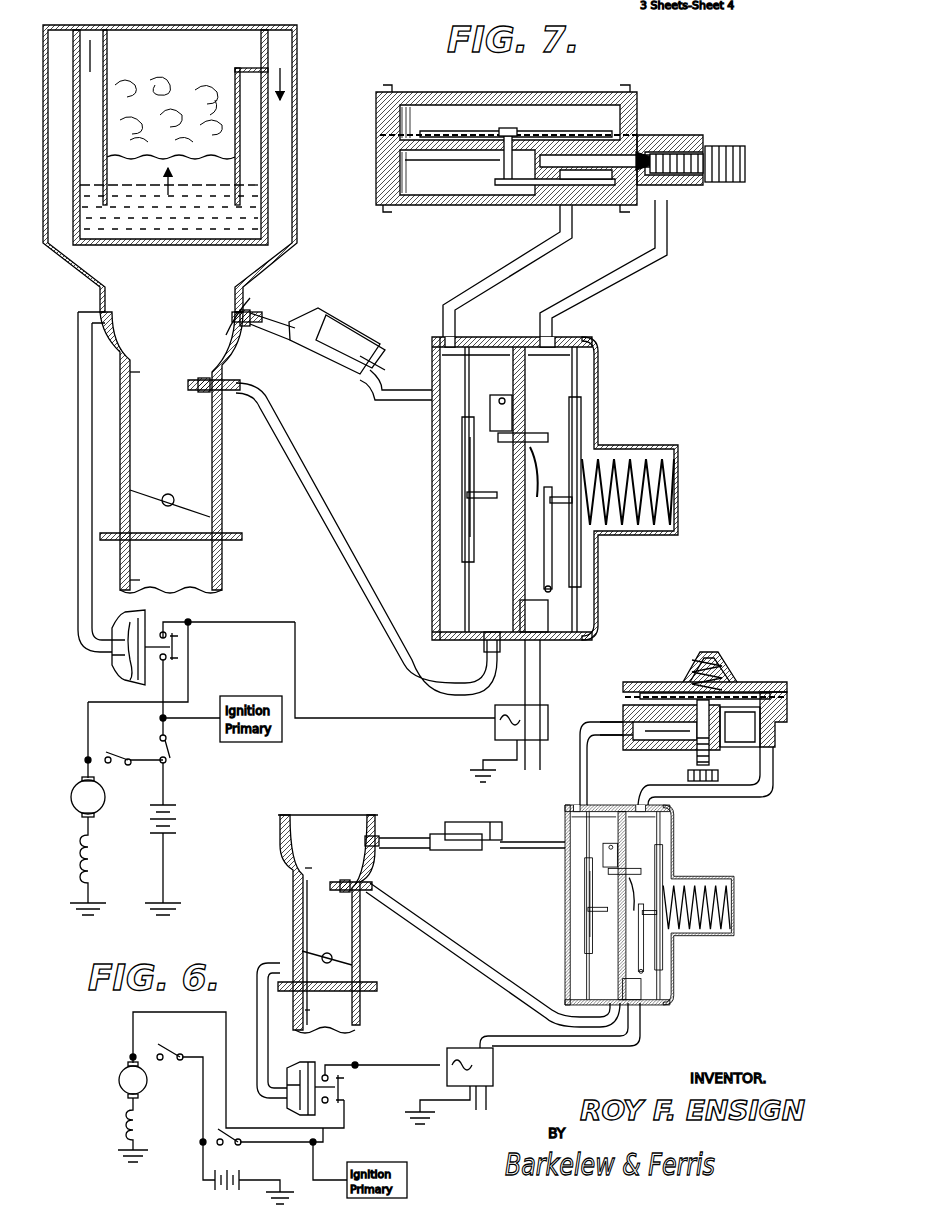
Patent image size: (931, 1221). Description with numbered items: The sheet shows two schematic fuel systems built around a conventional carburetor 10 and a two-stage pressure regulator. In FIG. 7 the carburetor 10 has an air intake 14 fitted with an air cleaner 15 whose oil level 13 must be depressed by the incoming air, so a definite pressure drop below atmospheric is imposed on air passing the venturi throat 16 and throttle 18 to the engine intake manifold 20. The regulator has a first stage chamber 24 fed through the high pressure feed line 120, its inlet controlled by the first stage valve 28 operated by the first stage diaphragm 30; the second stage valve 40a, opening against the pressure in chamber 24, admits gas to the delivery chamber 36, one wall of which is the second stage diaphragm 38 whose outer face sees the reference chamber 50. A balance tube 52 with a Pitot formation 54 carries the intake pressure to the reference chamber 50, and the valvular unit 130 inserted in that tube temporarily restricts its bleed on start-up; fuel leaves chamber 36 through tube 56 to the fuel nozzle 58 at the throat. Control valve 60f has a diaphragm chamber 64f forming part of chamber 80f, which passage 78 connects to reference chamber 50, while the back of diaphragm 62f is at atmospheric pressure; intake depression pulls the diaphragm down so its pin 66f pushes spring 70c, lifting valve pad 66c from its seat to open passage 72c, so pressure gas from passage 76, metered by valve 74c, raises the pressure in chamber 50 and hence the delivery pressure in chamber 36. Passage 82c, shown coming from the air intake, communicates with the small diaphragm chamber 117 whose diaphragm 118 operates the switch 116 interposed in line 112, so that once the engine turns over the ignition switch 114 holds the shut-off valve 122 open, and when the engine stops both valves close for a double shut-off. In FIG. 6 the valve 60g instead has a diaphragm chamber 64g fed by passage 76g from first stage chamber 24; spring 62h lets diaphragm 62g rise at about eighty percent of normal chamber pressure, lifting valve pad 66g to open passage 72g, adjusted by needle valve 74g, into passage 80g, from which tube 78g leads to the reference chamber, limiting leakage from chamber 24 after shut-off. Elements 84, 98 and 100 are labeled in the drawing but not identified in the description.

In FIG. 7, the carburetor 10 is at (118, 442).
In FIG. 7, the oil level 13 is at (250, 185).
In FIG. 7, the air intake 14 is at (195, 317).
In FIG. 6, the air intake 14 is at (328, 924).
In FIG. 7, the air cleaner 15 is at (300, 90).
In FIG. 7, the venturi throat 16 is at (169, 366).
In FIG. 6, the venturi throat 16 is at (328, 864).
In FIG. 7, the throttle 18 is at (170, 497).
In FIG. 6, the throttle 18 is at (345, 960).
In FIG. 7, the engine intake manifold 20 is at (170, 564).
In FIG. 6, the engine intake manifold 20 is at (325, 1008).
In FIG. 7, the first stage chamber 24 is at (555, 489).
In FIG. 6, the first stage chamber 24 is at (676, 906).
In FIG. 7, the first stage valve 28 is at (582, 610).
In FIG. 6, the first stage valve 28 is at (632, 989).
In FIG. 7, the first stage diaphragm 30 is at (588, 494).
In FIG. 6, the first stage diaphragm 30 is at (643, 926).
In FIG. 7, the delivery chamber 36 is at (486, 493).
In FIG. 6, the delivery chamber 36 is at (562, 925).
In FIG. 7, the second stage diaphragm 38 is at (428, 489).
In FIG. 6, the second stage diaphragm 38 is at (558, 906).
In FIG. 7, the second stage valve 40a is at (560, 429).
In FIG. 6, the second stage valve 40a is at (653, 875).
In FIG. 7, the reference chamber 50 is at (530, 488).
In FIG. 6, the reference chamber 50 is at (626, 905).
In FIG. 7, the balance tube 52 is at (400, 393).
In FIG. 6, the balance tube 52 is at (410, 838).
In FIG. 7, the Pitot formation 54 is at (248, 312).
In FIG. 7, the tube 56 is at (330, 485).
In FIG. 6, the tube 56 is at (486, 958).
In FIG. 7, the fuel nozzle 58 is at (200, 390).
In FIG. 6, the fuel nozzle 58 is at (345, 890).
In FIG. 7, the control valve 60f is at (580, 90).
In FIG. 7, the diaphragm 62f is at (418, 133).
In FIG. 7, the diaphragm chamber 64f is at (460, 130).
In FIG. 7, the pin 66f is at (500, 166).
In FIG. 7, the valve pad 66c is at (545, 185).
In FIG. 7, the flat spring 70c is at (590, 180).
In FIG. 7, the passage 72c is at (615, 140).
In FIG. 7, the valve 74c is at (680, 148).
In FIG. 7, the passage 76 is at (620, 285).
In FIG. 7, the passage 78 is at (485, 285).
In FIG. 7, the chamber 80f is at (455, 195).
In FIG. 7, the passage 82c is at (88, 502).
In FIG. 6, the passage 82c is at (278, 958).
In FIG. 7, the fuel line 84 is at (262, 330).
In FIG. 7, the generator 98 is at (72, 796).
In FIG. 6, the generator 98 is at (118, 1082).
In FIG. 7, the switch 100 is at (120, 755).
In FIG. 6, the switch 100 is at (178, 1052).
In FIG. 7, the conductor 112 is at (360, 715).
In FIG. 7, the ignition switch 114 is at (178, 765).
In FIG. 6, the ignition switch 114 is at (228, 1148).
In FIG. 7, the manifold actuated switch 116 is at (182, 646).
In FIG. 6, the manifold actuated switch 116 is at (350, 1090).
In FIG. 7, the diaphragm chamber 117 is at (120, 670).
In FIG. 6, the diaphragm chamber 117 is at (290, 1102).
In FIG. 7, the diaphragm 118 is at (158, 622).
In FIG. 7, the high pressure feed line 120 is at (545, 668).
In FIG. 6, the high pressure feed line 120 is at (645, 1027).
In FIG. 7, the shut-off valve 122 is at (492, 738).
In FIG. 6, the shut-off valve 122 is at (500, 1066).
In FIG. 7, the valvular unit 130 is at (360, 325).
In FIG. 6, the valvular unit 130 is at (482, 820).
In FIG. 6, the valve 60g is at (748, 658).
In FIG. 6, the diaphragm 62g is at (665, 692).
In FIG. 6, the spring 62h is at (705, 658).
In FIG. 6, the diaphragm chamber 64g is at (745, 730).
In FIG. 6, the valve pad 66g is at (735, 695).
In FIG. 6, the passage 72g is at (632, 725).
In FIG. 6, the needle valve 74g is at (706, 782).
In FIG. 6, the passage 76g is at (775, 778).
In FIG. 6, the tube 78g is at (585, 760).
In FIG. 6, the passage 80g is at (670, 740).